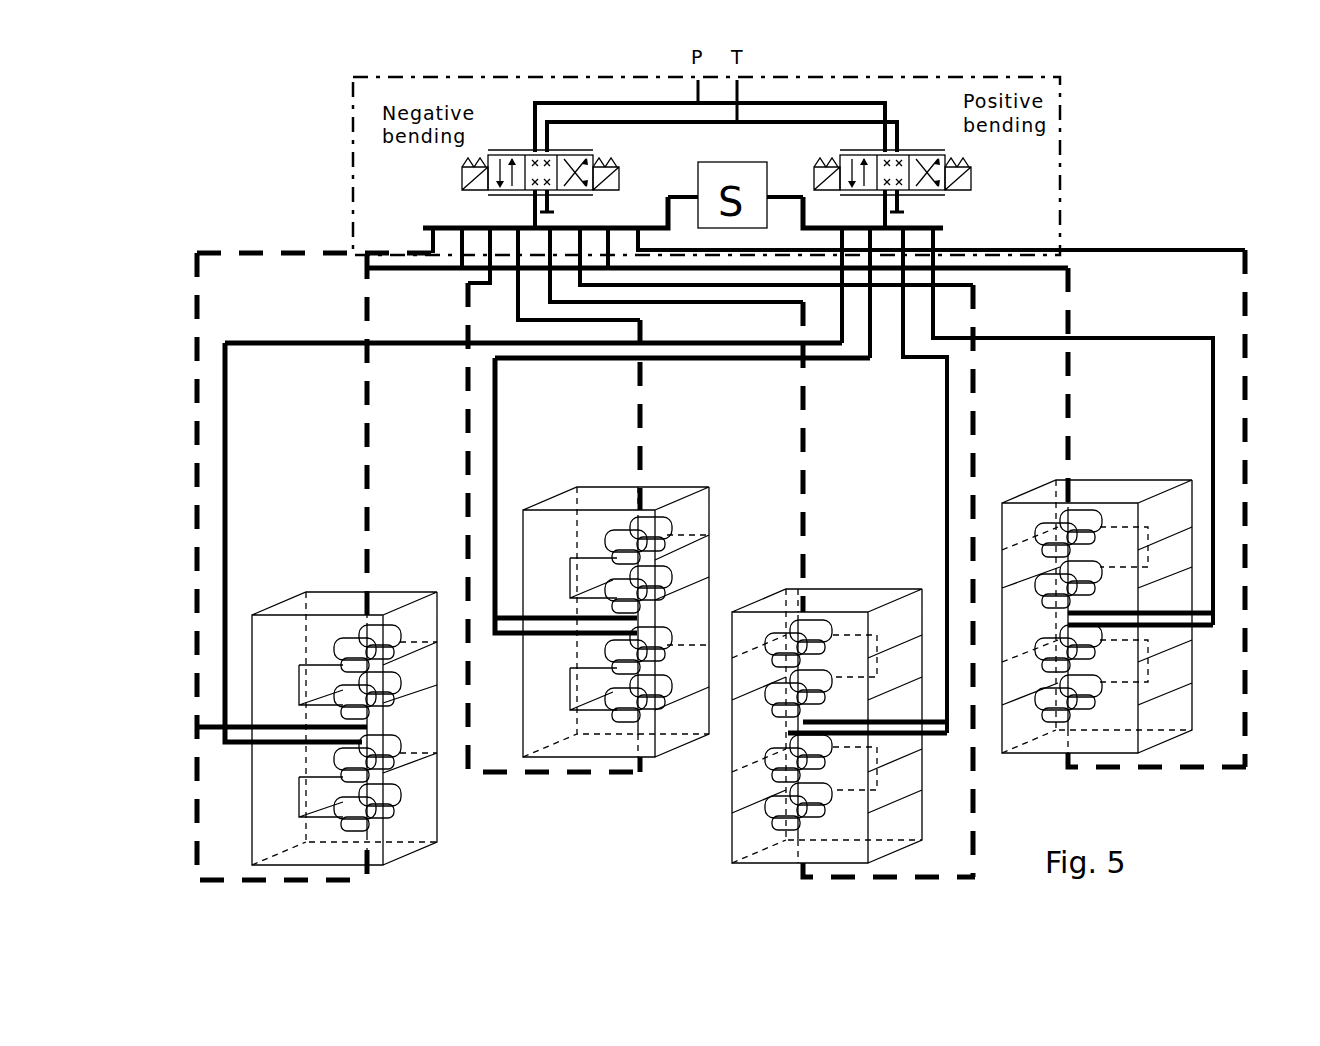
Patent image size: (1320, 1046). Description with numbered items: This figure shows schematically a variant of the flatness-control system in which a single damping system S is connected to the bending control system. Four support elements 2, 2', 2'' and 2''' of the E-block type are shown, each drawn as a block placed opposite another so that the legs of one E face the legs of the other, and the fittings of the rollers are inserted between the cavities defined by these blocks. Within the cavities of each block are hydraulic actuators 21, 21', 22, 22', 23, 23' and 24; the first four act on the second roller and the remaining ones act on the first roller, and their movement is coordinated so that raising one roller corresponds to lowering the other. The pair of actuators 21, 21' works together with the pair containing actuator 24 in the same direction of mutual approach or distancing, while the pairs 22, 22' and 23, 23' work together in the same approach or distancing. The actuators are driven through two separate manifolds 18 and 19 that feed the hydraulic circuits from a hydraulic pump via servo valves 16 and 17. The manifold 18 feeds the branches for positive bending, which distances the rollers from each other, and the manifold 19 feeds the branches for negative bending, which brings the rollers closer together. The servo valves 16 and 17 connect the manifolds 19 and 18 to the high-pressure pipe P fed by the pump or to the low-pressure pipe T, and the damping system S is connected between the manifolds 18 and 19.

The support element 2 is at (374, 728).
The support element 2' is at (796, 726).
The support element 2'' is at (616, 648).
The support element 2''' is at (1141, 616).
The servo valve 16 is at (574, 188).
The servo valve 17 is at (885, 153).
The manifold 18 is at (840, 227).
The manifold 19 is at (639, 228).
The hydraulic actuator 21 is at (265, 828).
The hydraulic actuator 21' is at (276, 799).
The hydraulic actuator 22 is at (267, 762).
The hydraulic actuator 22' is at (279, 743).
The hydraulic actuator 23 is at (244, 693).
The hydraulic actuator 23' is at (257, 670).
The hydraulic actuator 24 is at (357, 635).